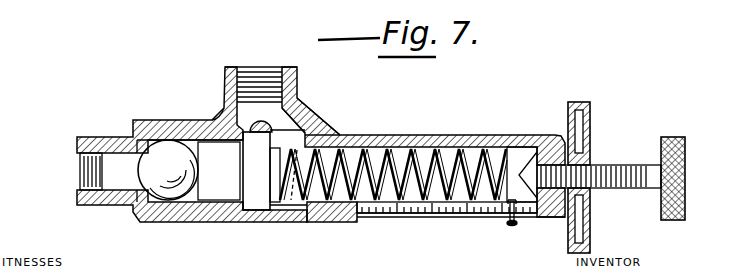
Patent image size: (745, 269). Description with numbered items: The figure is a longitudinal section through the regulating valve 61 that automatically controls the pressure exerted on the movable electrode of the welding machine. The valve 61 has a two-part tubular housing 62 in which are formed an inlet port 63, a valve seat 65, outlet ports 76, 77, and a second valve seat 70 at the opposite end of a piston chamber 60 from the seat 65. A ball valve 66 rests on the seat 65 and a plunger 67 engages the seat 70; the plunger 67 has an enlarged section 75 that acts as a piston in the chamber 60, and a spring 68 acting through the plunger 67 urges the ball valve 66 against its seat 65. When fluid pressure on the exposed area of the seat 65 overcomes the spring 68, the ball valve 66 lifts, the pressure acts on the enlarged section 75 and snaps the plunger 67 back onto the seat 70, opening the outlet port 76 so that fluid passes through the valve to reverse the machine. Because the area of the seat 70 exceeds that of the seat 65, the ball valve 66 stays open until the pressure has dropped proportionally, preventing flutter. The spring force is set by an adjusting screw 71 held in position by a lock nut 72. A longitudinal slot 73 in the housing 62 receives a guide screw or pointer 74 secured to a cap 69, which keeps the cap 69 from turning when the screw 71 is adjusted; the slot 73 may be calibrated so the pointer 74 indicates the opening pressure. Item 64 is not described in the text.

The piston chamber 60 is at (285, 205).
The regulating valve 61 is at (391, 130).
The two-part tubular housing 62 is at (427, 135).
The inlet port 63 is at (79, 164).
The threaded boss nut 64 is at (224, 81).
The valve seat 65 is at (134, 208).
The ball valve 66 is at (164, 152).
The plunger 67 is at (312, 205).
The spring 68 is at (469, 158).
The cap 69 is at (518, 157).
The valve seat 70 is at (326, 130).
The adjusting screw 71 is at (620, 167).
The lock nut 72 is at (590, 109).
The longitudinal slot 73 is at (437, 215).
The guide screw or pointer 74 is at (512, 226).
The enlarged section 75 is at (259, 200).
The outlet port 76 is at (221, 109).
The outlet port 77 is at (301, 121).